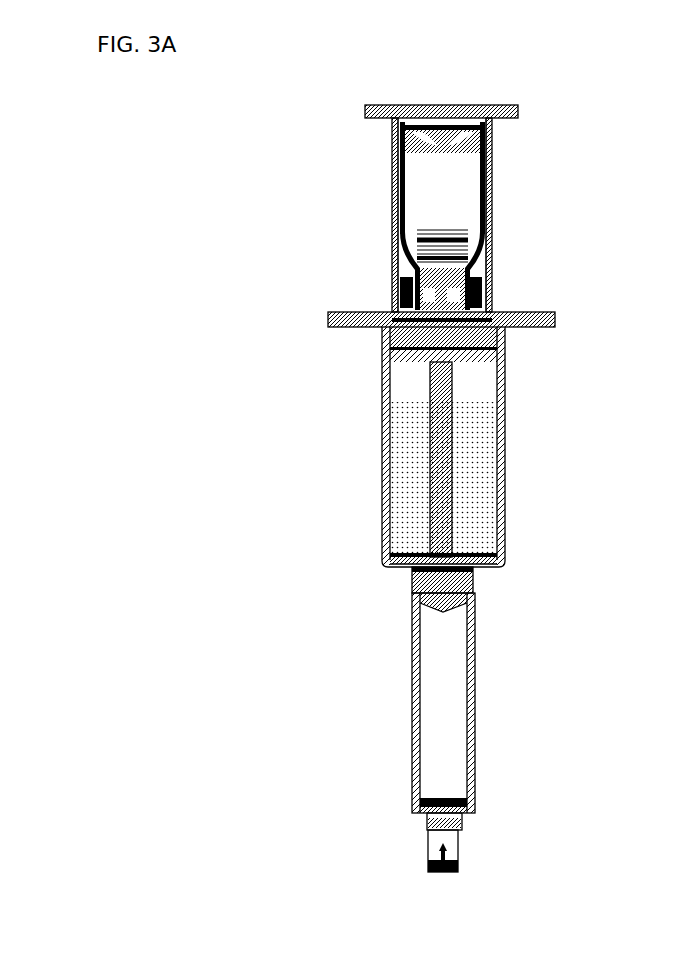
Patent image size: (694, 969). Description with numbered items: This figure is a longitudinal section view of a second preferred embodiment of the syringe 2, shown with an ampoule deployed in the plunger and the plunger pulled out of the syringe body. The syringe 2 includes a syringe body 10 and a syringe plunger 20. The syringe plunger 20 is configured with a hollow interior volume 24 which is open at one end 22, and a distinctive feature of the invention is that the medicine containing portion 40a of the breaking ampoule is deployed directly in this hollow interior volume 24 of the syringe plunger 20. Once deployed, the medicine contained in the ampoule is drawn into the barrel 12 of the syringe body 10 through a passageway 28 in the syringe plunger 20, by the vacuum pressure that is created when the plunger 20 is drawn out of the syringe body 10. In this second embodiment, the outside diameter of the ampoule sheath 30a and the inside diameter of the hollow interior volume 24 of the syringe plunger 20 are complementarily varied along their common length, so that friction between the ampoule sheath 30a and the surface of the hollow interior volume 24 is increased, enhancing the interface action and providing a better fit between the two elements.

The syringe 2 is at (224, 229).
The syringe body 10 is at (372, 512).
The barrel 12 is at (452, 678).
The syringe plunger 20 is at (500, 178).
The open end 22 is at (463, 103).
The hollow interior volume 24 is at (423, 122).
The passageway 28 is at (445, 457).
The ampoule sheath 30a is at (485, 235).
The medicine containing portion 40a is at (440, 205).